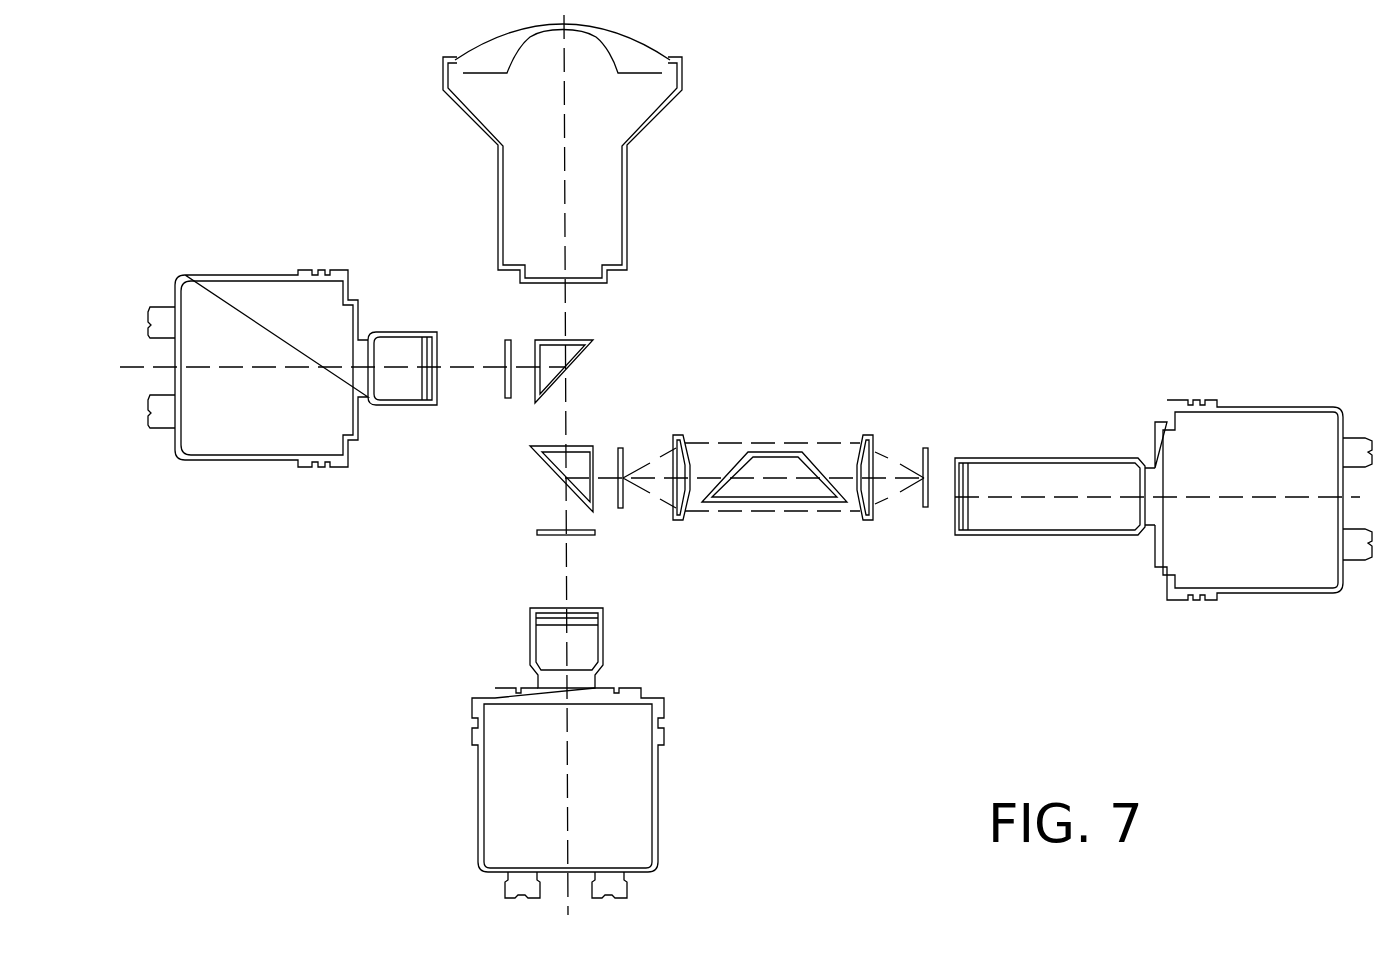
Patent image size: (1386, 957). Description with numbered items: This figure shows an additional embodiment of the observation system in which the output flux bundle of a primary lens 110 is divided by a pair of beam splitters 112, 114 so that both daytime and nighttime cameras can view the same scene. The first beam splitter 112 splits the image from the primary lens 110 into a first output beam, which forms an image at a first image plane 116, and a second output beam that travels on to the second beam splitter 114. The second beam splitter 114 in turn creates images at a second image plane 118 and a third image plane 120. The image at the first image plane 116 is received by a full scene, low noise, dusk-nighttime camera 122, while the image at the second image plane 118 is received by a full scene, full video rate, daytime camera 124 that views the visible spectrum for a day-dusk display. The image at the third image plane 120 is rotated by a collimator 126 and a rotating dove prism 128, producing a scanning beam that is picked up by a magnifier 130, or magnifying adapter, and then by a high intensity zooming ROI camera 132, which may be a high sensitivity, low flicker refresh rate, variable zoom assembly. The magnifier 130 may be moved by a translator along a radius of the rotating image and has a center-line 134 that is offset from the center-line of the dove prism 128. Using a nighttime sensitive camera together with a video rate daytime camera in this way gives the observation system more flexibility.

The primary lens 110 is at (626, 183).
The beam splitter 112 is at (596, 340).
The beam splitter 114 is at (528, 462).
The first image plane 116 is at (508, 398).
The second image plane 118 is at (537, 536).
The third image plane 120 is at (618, 447).
The dusk-nighttime camera 122 is at (250, 275).
The daytime camera 124 is at (475, 808).
The collimator 126 is at (683, 521).
The rotating dove prism 128 is at (775, 503).
The magnifier 130 is at (1050, 536).
The zooming ROI camera 132 is at (1250, 594).
The center-line 134 is at (928, 497).